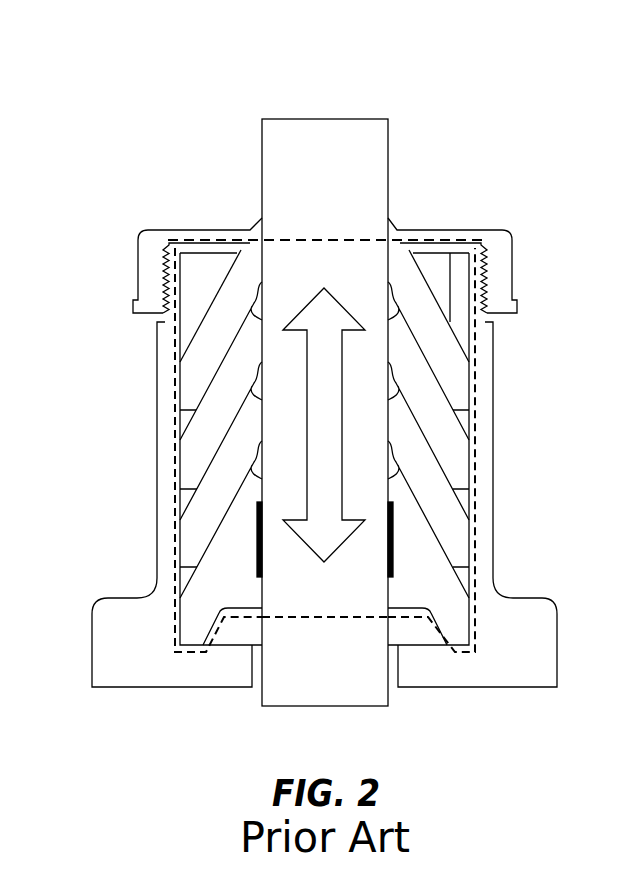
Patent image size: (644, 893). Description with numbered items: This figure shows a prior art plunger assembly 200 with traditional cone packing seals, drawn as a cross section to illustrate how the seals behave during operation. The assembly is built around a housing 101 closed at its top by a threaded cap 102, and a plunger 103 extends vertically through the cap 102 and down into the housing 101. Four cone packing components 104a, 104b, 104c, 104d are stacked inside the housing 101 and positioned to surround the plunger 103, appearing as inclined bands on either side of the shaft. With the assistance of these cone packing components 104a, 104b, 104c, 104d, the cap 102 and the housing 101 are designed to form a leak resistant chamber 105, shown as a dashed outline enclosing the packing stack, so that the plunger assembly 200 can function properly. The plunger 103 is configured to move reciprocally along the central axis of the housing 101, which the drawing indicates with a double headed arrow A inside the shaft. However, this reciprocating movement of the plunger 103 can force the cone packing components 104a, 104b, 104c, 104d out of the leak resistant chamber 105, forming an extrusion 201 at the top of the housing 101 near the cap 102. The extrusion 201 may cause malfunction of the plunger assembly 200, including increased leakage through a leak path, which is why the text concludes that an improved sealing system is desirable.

The prior art engine mount assembly 200 is at (475, 108).
The extrusion 201 is at (393, 215).
The housing 101 is at (136, 606).
The cap 102 is at (152, 238).
The plunger 103 is at (276, 174).
The cone packing component 104a is at (458, 385).
The cone packing component 104b is at (458, 467).
The cone packing component 104c is at (458, 547).
The cone packing component 104d is at (455, 622).
The leak resistant chamber 105 is at (466, 654).